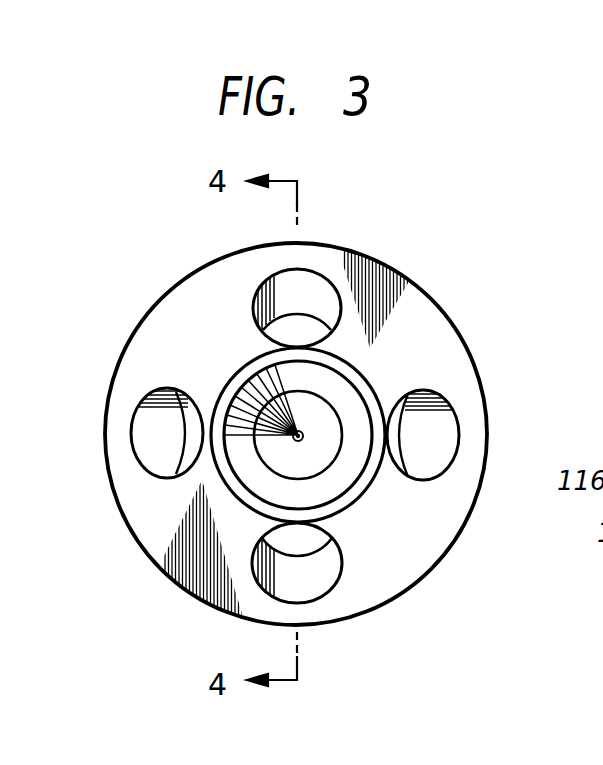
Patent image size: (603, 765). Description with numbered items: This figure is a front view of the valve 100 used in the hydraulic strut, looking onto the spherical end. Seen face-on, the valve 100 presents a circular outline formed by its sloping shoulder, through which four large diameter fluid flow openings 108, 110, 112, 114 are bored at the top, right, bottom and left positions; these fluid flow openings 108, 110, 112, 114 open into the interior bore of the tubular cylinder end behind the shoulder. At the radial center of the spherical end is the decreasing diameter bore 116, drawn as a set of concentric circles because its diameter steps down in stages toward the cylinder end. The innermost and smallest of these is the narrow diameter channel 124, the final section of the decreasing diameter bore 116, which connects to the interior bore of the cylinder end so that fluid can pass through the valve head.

The valve 100 is at (430, 293).
The fluid flow opening 108 is at (306, 294).
The fluid flow opening 110 is at (435, 437).
The fluid flow opening 112 is at (302, 583).
The fluid flow opening 114 is at (148, 450).
The decreasing diameter bore 116 is at (322, 453).
The narrow diameter channel 124 is at (297, 441).